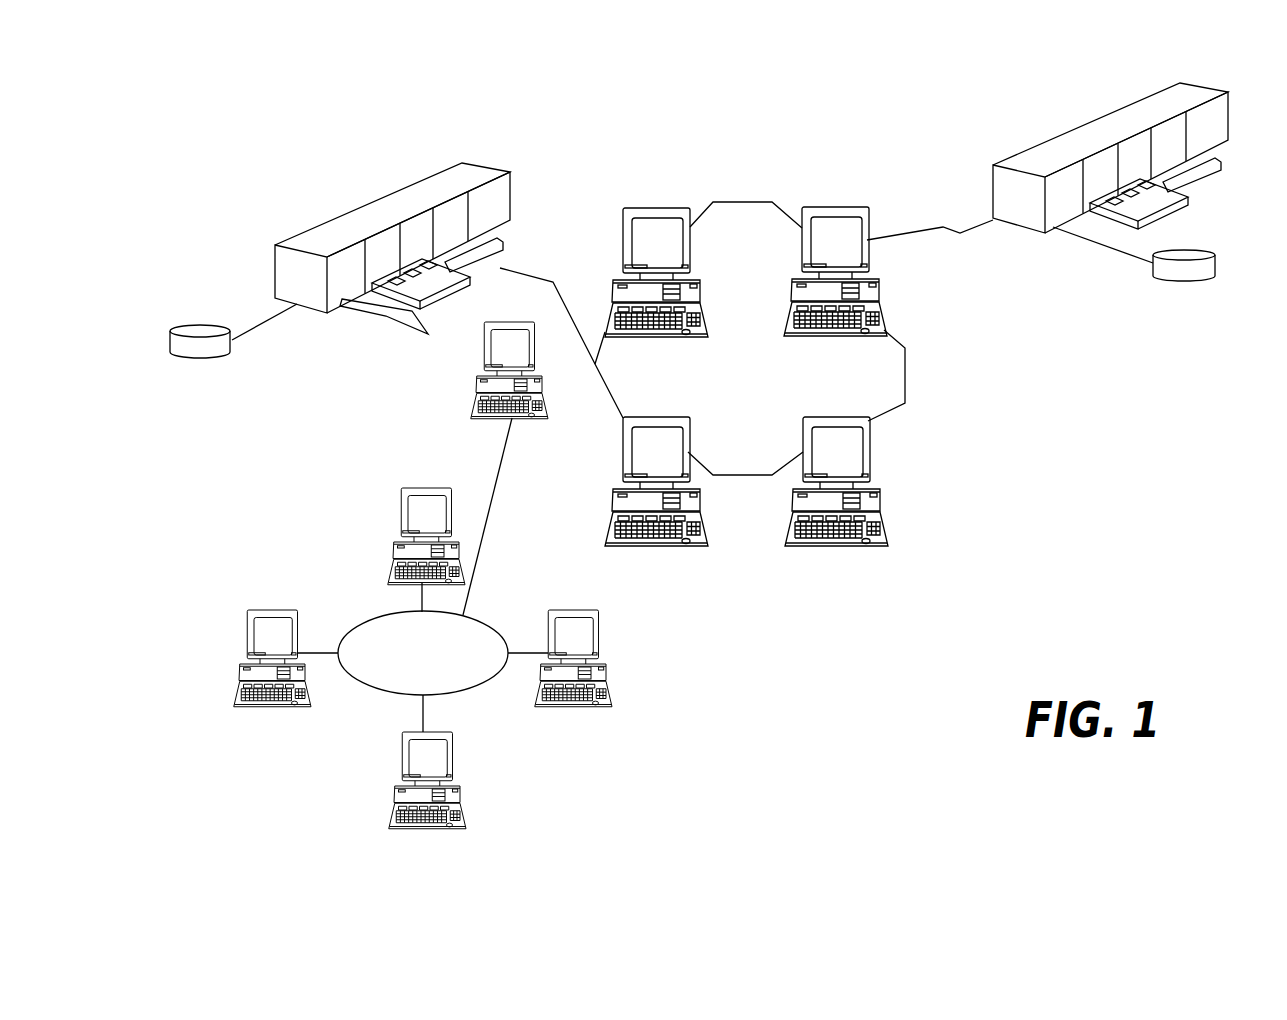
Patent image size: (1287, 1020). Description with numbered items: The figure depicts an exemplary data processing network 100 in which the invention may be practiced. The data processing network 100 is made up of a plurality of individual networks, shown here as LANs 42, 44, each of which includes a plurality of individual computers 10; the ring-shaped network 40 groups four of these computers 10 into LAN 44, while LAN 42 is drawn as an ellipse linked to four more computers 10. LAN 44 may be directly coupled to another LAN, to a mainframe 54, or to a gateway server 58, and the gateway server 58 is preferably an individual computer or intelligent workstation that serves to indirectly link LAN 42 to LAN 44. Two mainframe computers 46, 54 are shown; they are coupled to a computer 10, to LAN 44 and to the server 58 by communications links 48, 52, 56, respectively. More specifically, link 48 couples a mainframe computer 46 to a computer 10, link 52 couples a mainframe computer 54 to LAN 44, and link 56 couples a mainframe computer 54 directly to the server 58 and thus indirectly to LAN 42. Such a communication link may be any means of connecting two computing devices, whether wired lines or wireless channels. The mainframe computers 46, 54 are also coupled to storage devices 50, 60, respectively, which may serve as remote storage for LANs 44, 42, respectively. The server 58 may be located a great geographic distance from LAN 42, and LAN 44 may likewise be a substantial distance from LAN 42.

The data processing network 100 is at (186, 132).
The individual computer 10 is at (430, 489).
The network 40 is at (750, 303).
The LAN 42 is at (484, 619).
The LAN 44 is at (747, 407).
The mainframe computer 46 is at (1067, 132).
The communications link 48 is at (980, 222).
The storage device 50 is at (1205, 252).
The communications link 52 is at (523, 270).
The mainframe computer 54 is at (400, 188).
The communications link 56 is at (387, 318).
The gateway server 58 is at (510, 322).
The storage device 60 is at (193, 323).